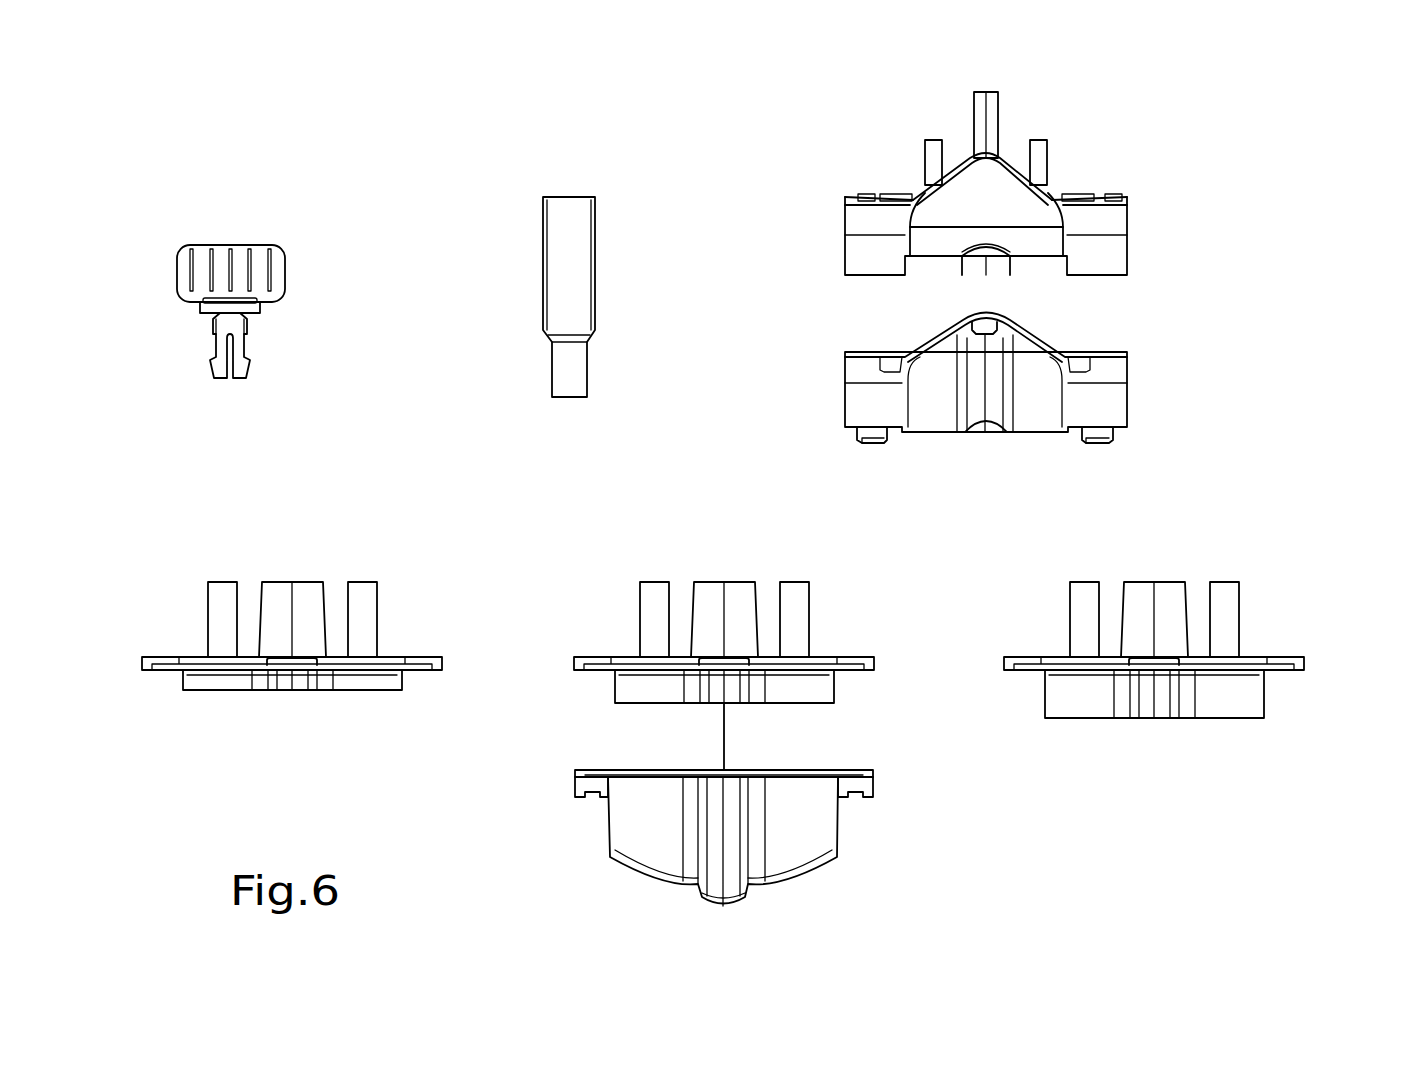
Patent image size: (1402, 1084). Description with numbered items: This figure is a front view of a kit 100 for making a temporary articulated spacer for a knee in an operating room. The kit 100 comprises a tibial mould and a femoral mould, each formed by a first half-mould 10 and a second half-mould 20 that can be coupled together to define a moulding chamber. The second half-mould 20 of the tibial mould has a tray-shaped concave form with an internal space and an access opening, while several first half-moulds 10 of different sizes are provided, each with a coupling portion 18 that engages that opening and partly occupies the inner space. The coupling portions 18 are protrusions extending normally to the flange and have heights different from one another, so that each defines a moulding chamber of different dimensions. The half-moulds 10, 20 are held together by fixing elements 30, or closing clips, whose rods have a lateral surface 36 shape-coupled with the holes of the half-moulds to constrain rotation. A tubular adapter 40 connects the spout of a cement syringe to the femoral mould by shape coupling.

The kit 100 is at (1243, 217).
The first half-mould 10 is at (815, 237).
The coupling portion 18 is at (180, 688).
The second half-mould 20 is at (805, 375).
The fixing element 30 is at (198, 220).
The lateral surface 36 is at (246, 347).
The tubular adapter 40 is at (525, 258).